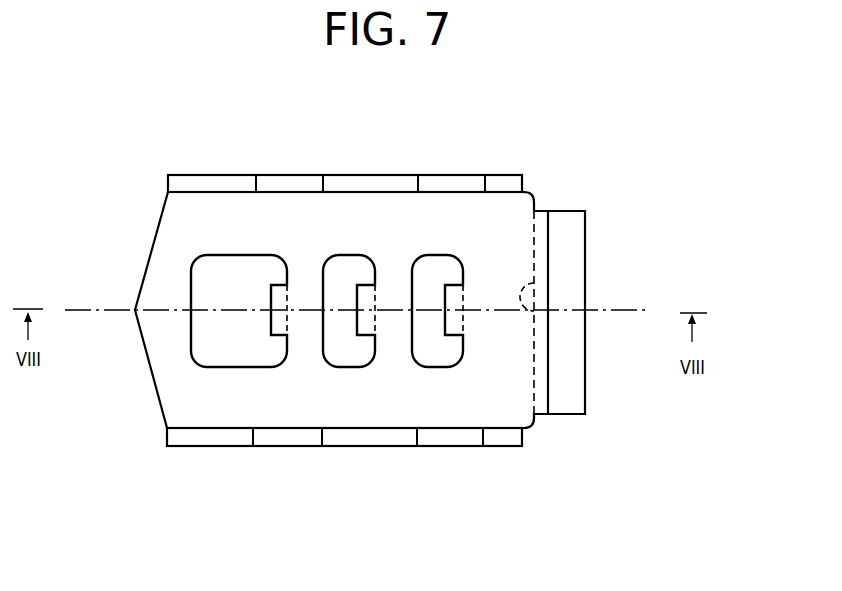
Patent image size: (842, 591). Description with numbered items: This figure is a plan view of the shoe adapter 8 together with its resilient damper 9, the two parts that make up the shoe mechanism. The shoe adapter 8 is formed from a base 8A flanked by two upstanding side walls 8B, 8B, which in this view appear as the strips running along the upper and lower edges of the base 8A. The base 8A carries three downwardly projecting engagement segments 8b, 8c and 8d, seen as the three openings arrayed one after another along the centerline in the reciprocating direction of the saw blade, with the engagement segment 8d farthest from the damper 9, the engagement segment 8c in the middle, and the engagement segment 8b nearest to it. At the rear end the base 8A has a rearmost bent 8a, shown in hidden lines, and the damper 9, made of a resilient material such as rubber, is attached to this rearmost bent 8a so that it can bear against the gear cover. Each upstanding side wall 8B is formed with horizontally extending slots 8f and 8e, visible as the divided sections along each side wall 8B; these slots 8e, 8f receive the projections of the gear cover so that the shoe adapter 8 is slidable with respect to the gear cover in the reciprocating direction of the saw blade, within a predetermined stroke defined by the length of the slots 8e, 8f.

The shoe adapter 8 is at (692, 152).
The base 8A is at (171, 379).
The upstanding side wall 8B is at (377, 185).
The rearmost bent 8a is at (534, 281).
The engagement segment 8b is at (445, 308).
The engagement segment 8c is at (358, 306).
The engagement segment 8d is at (270, 307).
The slot 8e is at (453, 185).
The slot 8f is at (292, 185).
The damper 9 is at (567, 402).